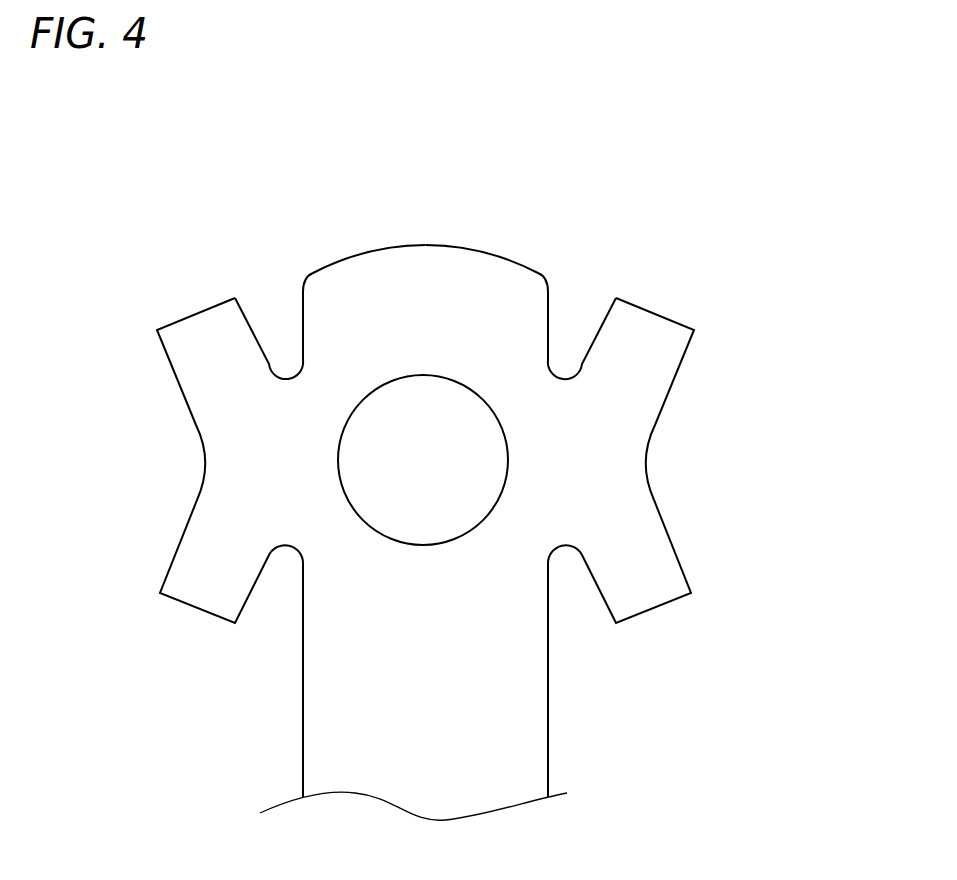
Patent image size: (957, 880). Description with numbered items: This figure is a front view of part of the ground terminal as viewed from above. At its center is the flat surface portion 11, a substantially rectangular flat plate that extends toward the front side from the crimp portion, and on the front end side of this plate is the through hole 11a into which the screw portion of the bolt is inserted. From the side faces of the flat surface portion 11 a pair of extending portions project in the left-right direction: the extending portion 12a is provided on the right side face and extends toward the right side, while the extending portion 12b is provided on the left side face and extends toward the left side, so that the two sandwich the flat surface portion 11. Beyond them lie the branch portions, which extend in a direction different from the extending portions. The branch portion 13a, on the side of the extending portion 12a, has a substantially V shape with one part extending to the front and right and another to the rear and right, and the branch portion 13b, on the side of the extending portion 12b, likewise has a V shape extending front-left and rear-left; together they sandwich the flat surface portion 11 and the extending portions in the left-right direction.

The flat surface portion 11 is at (358, 665).
The through hole 11a is at (477, 526).
The extending portion 12a is at (285, 430).
The extending portion 12b is at (576, 424).
The branch portion 13a is at (222, 447).
The branch portion 13b is at (603, 470).